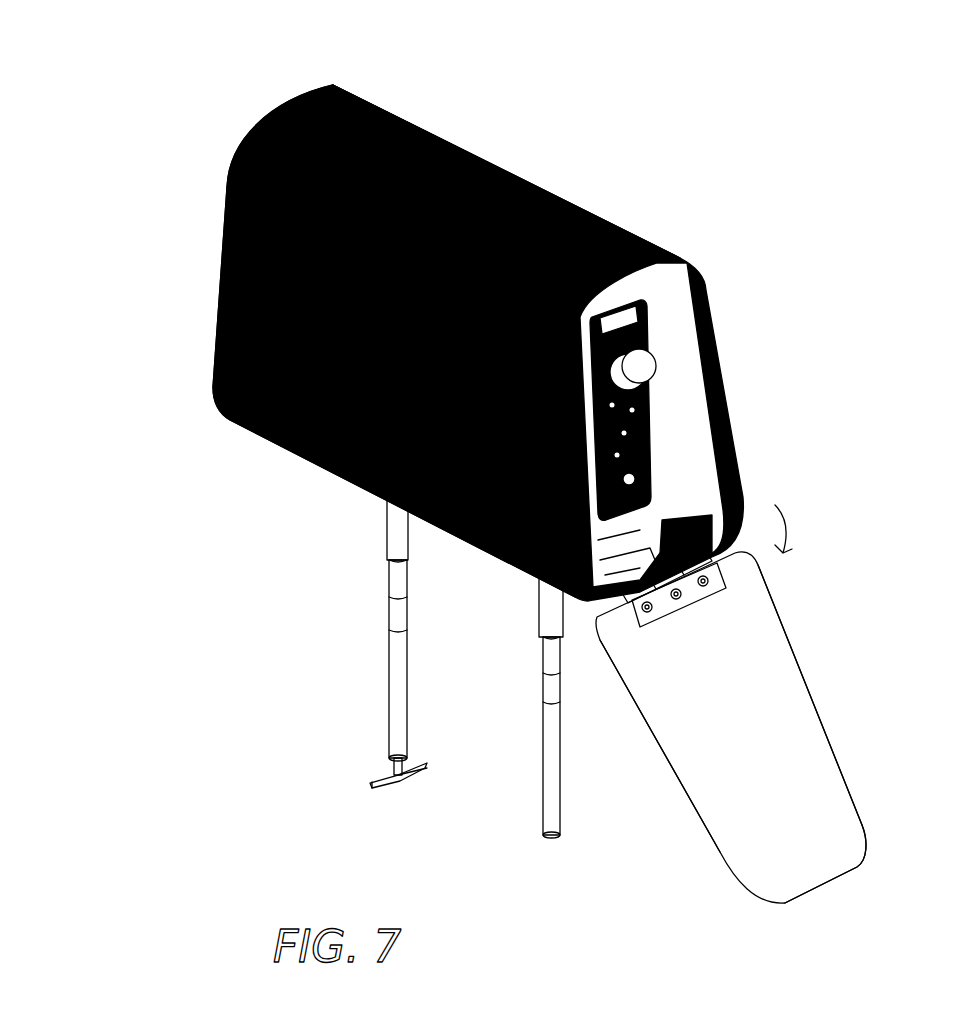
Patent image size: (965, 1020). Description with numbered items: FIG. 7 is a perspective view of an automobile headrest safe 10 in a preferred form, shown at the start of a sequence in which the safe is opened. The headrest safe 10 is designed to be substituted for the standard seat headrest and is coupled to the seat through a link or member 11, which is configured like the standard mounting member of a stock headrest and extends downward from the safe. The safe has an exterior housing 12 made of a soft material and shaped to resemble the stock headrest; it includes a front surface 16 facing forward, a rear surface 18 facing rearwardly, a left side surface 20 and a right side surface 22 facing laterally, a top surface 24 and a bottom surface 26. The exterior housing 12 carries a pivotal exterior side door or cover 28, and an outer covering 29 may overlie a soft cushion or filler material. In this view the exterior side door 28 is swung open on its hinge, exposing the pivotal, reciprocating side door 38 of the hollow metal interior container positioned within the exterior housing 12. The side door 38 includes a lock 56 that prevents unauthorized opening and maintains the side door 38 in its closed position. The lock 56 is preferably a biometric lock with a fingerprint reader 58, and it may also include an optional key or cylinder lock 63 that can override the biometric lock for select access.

The headrest safe 10 is at (842, 222).
The link or member 11 is at (398, 607).
The exterior housing 12 is at (578, 205).
The front surface 16 is at (220, 290).
The rear surface 18 is at (498, 165).
The left side surface 20 is at (280, 107).
The right side surface 22 is at (817, 710).
The top surface 24 is at (417, 123).
The bottom surface 26 is at (323, 470).
The exterior side door 28 is at (788, 652).
The outer covering 29 is at (700, 808).
The side door 38 is at (837, 775).
The lock 56 is at (648, 427).
The fingerprint reader 58 is at (668, 470).
The key or cylinder lock 63 is at (650, 360).